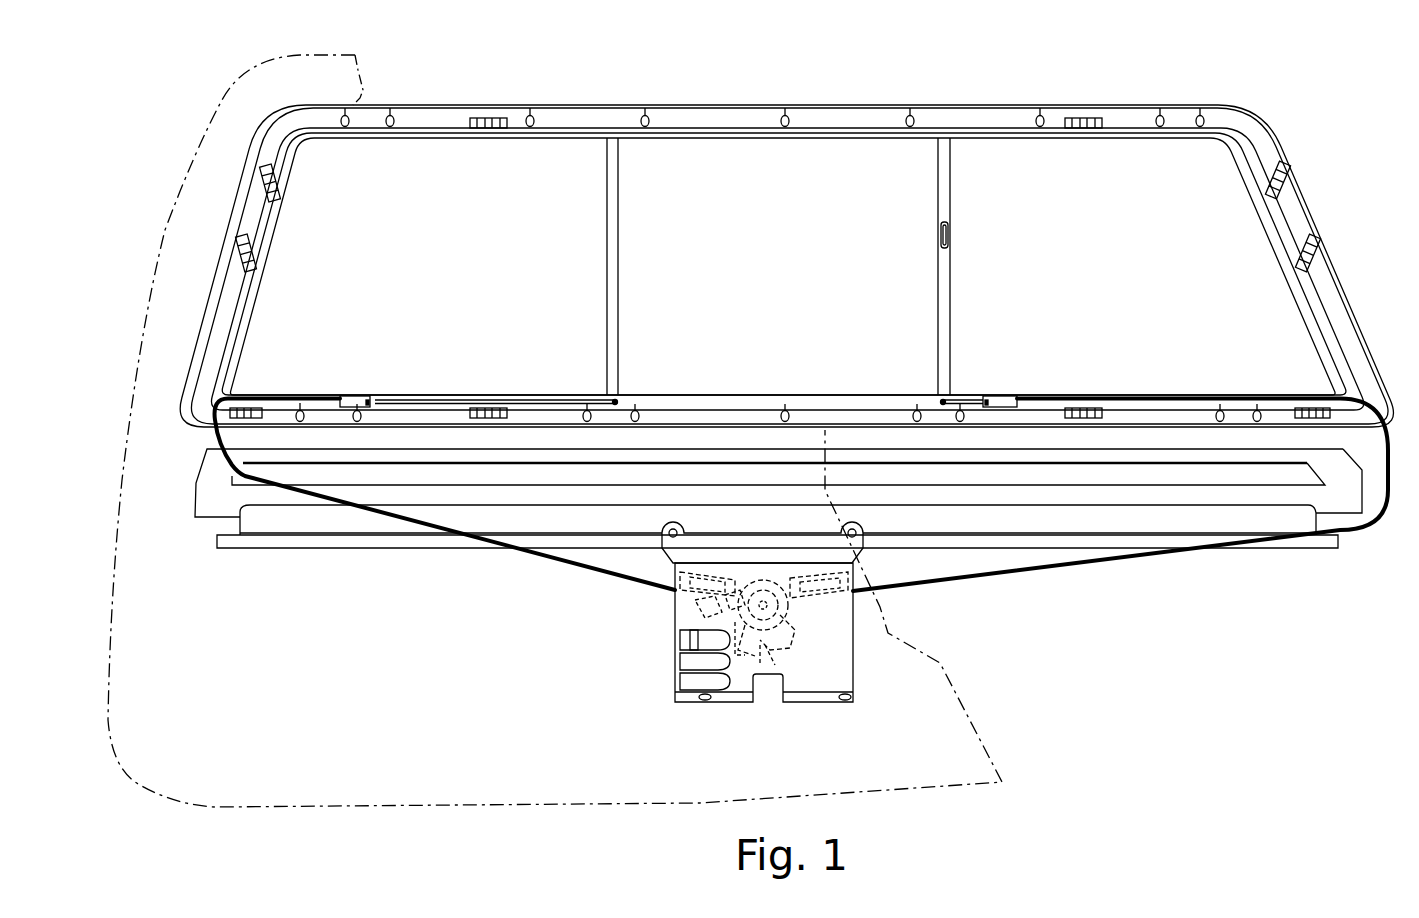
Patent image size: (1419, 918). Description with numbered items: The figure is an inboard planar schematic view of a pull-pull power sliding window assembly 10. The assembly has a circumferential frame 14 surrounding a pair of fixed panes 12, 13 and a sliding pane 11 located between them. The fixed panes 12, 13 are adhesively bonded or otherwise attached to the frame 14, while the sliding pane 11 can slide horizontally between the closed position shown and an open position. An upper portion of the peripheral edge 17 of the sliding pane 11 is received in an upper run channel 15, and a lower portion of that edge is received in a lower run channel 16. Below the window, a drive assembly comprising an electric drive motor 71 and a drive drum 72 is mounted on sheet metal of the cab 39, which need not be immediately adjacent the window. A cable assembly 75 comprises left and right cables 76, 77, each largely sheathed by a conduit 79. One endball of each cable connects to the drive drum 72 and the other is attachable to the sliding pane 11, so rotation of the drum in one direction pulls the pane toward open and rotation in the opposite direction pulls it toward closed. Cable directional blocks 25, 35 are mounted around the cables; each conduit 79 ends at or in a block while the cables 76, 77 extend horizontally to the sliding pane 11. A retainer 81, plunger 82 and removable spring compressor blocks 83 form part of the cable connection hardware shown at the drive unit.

The sliding window assembly 10 is at (860, 62).
The sliding pane 11 is at (770, 150).
The fixed pane 12 is at (440, 150).
The fixed pane 13 is at (1052, 150).
The circumferential frame 14 is at (680, 105).
The upper run channel 15 is at (545, 150).
The lower run channel 16 is at (545, 382).
The peripheral edge 17 is at (941, 232).
The cable directional block 25 is at (355, 396).
The cable directional block 35 is at (1003, 396).
The cab 39 is at (218, 540).
The electric drive motor 71 is at (700, 652).
The drive drum 72 is at (790, 608).
The cable assembly 75 is at (525, 603).
The left cable 76 is at (415, 400).
The right cable 77 is at (962, 400).
The conduit 79 is at (1060, 397).
The retainer 81 is at (725, 605).
The plunger 82 is at (695, 602).
The spring compressor block 83 is at (680, 582).